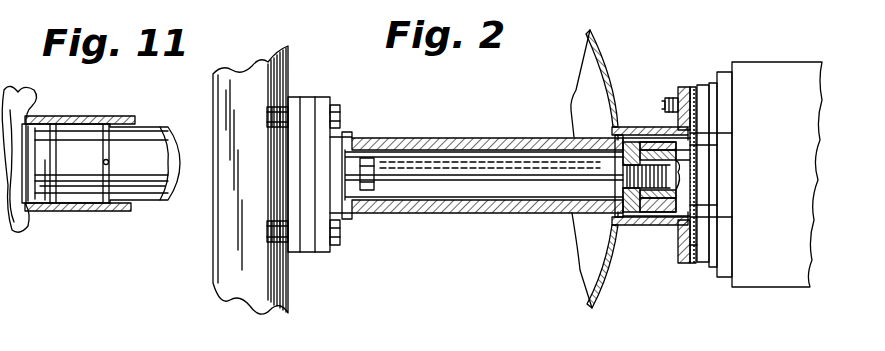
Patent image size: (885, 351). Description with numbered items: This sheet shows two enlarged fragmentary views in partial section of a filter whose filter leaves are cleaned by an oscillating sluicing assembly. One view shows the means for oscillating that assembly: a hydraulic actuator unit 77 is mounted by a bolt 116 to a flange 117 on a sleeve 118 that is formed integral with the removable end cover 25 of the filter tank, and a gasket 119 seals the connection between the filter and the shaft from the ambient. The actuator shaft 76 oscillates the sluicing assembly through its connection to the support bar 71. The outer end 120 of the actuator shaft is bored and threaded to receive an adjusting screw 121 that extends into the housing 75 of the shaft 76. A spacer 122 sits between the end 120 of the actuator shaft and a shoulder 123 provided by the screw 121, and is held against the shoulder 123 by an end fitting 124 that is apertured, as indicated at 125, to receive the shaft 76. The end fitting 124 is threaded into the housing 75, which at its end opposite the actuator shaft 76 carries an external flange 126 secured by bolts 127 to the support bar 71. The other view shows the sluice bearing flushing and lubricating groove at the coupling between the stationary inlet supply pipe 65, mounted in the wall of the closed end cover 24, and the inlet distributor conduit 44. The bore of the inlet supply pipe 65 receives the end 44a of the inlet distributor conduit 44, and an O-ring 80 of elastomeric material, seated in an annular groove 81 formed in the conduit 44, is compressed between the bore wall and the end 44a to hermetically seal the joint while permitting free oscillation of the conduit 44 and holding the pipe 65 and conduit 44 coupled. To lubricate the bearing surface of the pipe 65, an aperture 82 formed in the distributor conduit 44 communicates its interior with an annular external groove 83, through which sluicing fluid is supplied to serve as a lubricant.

In FIG. 11, the closed end cover 24 is at (32, 100).
In FIG. 11, the inlet supply pipe 65 is at (6, 100).
In FIG. 11, the inlet distributor conduit 44 is at (147, 196).
In FIG. 11, the end of the inlet distributor conduit 44a is at (80, 190).
In FIG. 11, the O-ring 80 is at (57, 190).
In FIG. 11, the annular groove 81 is at (58, 134).
In FIG. 11, the annular external groove 83 is at (104, 134).
In FIG. 11, the aperture 82 is at (110, 163).
In FIG. 2, the support bar 71 is at (288, 64).
In FIG. 2, the external flange 126 is at (308, 99).
In FIG. 2, the bolts 127 is at (342, 114).
In FIG. 2, the housing 75 is at (474, 140).
In FIG. 2, the adjusting screw 121 is at (408, 150).
In FIG. 2, the removable end cover 25 is at (604, 62).
In FIG. 2, the sleeve 118 is at (629, 127).
In FIG. 2, the outer end of the actuator shaft 120 is at (610, 213).
In FIG. 2, the spacer 122 is at (622, 152).
In FIG. 2, the actuator shaft 76 is at (668, 142).
In FIG. 2, the shoulder 123 is at (628, 176).
In FIG. 2, the flange 117 is at (683, 87).
In FIG. 2, the bolt 116 is at (668, 98).
In FIG. 2, the hydraulic actuator unit 77 is at (838, 94).
In FIG. 2, the end fitting 124 is at (674, 148).
In FIG. 2, the aperture of the end fitting 125 is at (674, 158).
In FIG. 2, the gasket 119 is at (693, 248).